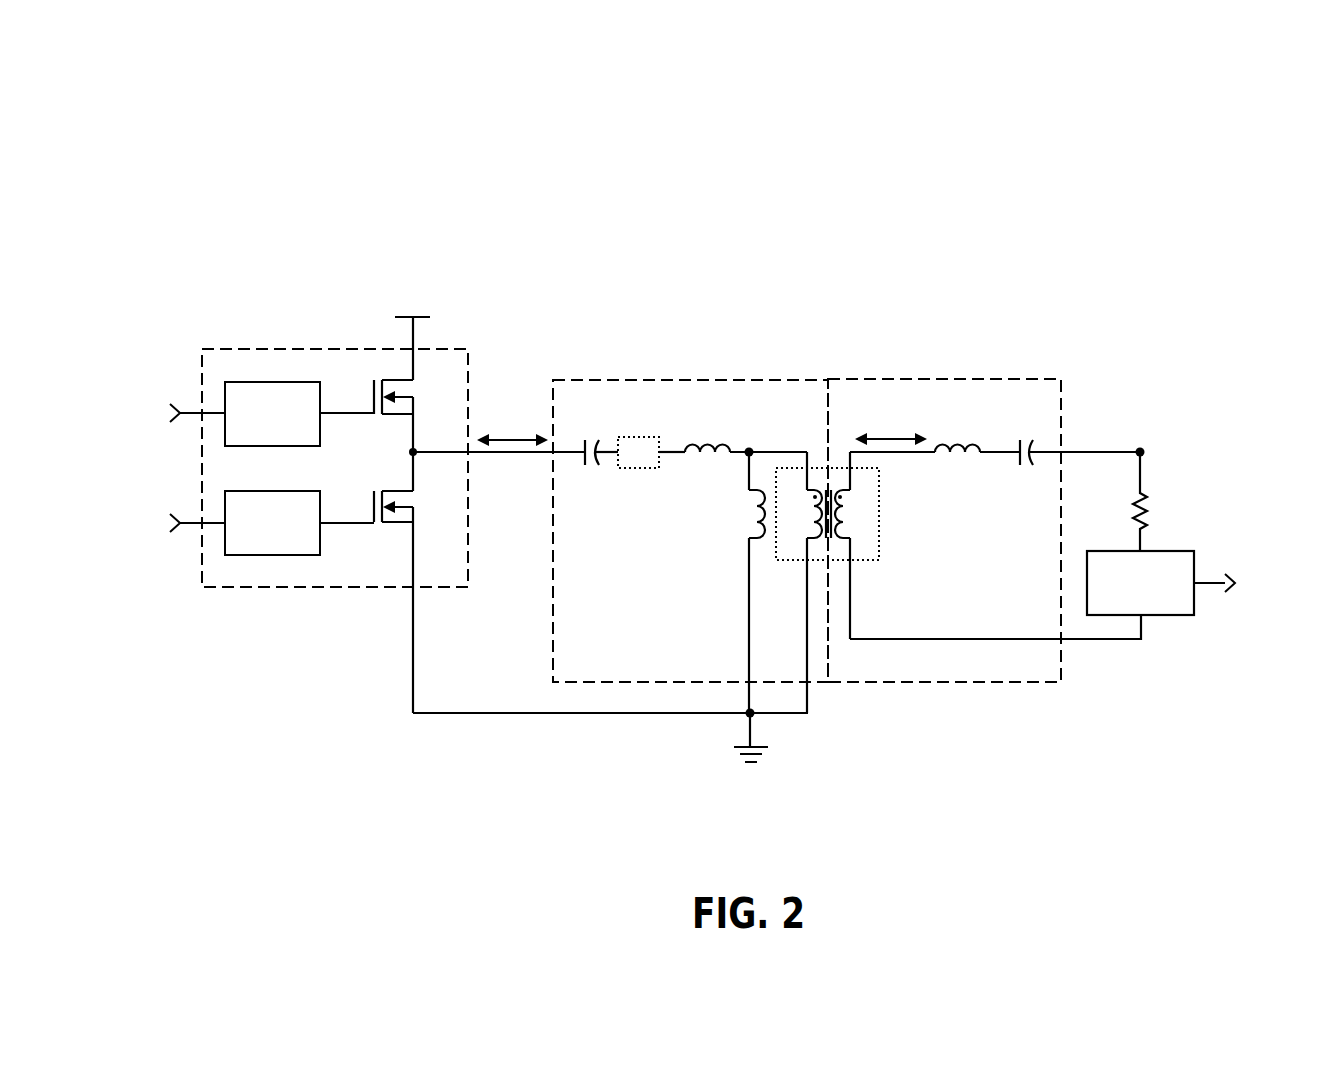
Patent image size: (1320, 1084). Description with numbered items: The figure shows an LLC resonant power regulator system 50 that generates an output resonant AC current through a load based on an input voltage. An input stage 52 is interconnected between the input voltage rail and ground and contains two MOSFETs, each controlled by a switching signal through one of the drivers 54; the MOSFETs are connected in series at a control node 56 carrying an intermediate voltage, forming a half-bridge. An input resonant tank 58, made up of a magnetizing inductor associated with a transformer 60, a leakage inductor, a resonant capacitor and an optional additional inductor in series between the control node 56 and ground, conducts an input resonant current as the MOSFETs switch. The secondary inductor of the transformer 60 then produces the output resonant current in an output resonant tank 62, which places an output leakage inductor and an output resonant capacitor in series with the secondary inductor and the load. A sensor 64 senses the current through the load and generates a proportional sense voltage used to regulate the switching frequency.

The LLC resonant power regulator system 50 is at (232, 150).
The input stage 52 is at (437, 349).
The drivers 54 is at (305, 382).
The control node 56 is at (410, 455).
The input resonant tank 58 is at (687, 380).
The transformer 60 is at (880, 540).
The output resonant tank 62 is at (1015, 379).
The sensor 64 is at (1195, 551).